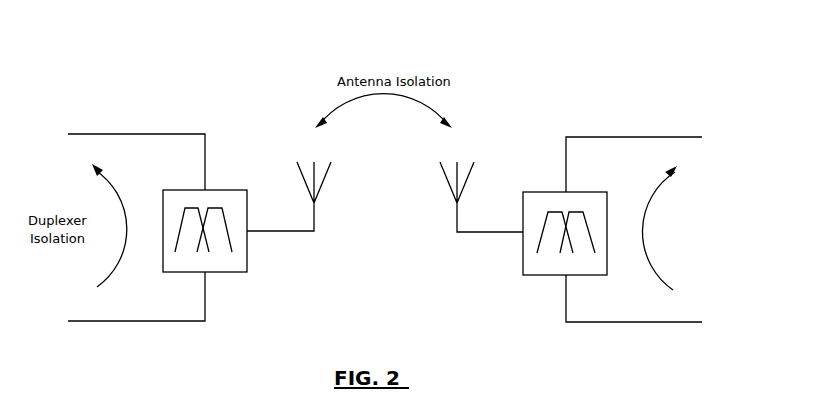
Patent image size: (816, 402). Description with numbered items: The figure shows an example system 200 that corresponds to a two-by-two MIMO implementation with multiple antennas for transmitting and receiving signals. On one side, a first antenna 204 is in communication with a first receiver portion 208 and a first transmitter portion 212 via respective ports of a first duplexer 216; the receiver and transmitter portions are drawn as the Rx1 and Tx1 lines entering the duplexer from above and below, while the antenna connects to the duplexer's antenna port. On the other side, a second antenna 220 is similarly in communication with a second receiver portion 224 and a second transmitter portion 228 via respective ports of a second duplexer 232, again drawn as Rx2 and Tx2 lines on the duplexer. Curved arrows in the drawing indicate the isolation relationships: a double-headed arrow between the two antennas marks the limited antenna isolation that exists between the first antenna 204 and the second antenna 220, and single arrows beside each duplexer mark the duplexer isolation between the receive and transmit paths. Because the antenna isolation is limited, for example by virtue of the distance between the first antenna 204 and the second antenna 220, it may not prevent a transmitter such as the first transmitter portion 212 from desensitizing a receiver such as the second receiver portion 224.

The system 200 is at (84, 48).
The first antenna 204 is at (314, 232).
The first receiver portion 208 is at (157, 134).
The first transmitter portion 212 is at (158, 321).
The first duplexer 216 is at (217, 190).
The second antenna 220 is at (466, 187).
The second receiver portion 224 is at (656, 137).
The second transmitter portion 228 is at (626, 322).
The second duplexer 232 is at (523, 258).